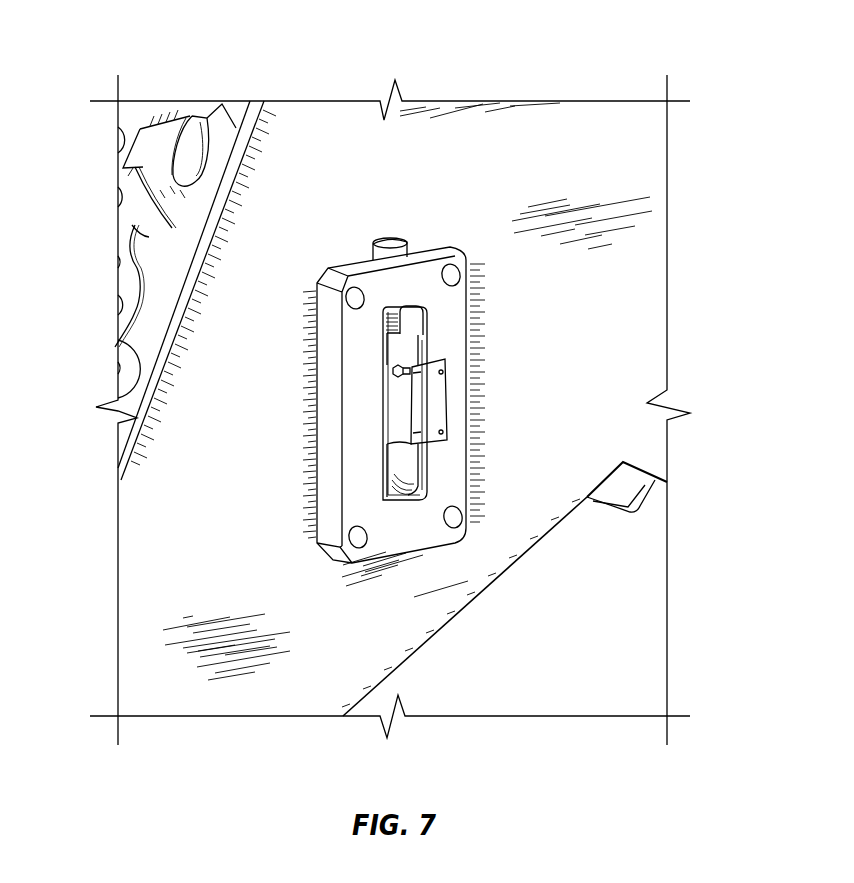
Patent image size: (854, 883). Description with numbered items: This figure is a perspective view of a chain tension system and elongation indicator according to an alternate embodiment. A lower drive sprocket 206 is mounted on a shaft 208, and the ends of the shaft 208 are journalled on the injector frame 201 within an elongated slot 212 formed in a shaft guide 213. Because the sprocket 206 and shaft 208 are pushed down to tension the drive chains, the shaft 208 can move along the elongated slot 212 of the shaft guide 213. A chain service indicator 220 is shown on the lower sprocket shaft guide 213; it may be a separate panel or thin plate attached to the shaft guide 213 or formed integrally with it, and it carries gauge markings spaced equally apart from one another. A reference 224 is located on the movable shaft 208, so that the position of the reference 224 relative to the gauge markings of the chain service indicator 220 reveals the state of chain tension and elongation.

The injector frame 201 is at (472, 130).
The lower drive sprocket 206 is at (178, 226).
The shaft 208 is at (397, 350).
The elongated slot 212 is at (413, 462).
The shaft guide 213 is at (445, 331).
The chain service indicator 220 is at (450, 398).
The reference 224 is at (393, 377).